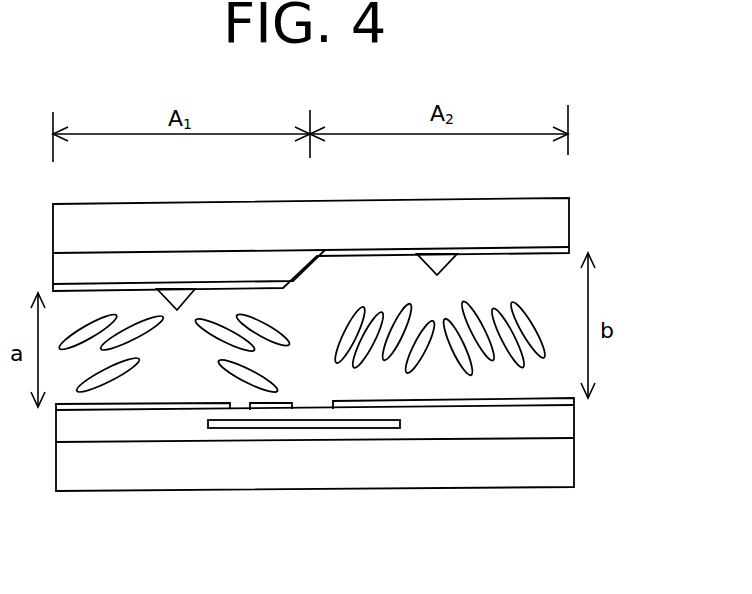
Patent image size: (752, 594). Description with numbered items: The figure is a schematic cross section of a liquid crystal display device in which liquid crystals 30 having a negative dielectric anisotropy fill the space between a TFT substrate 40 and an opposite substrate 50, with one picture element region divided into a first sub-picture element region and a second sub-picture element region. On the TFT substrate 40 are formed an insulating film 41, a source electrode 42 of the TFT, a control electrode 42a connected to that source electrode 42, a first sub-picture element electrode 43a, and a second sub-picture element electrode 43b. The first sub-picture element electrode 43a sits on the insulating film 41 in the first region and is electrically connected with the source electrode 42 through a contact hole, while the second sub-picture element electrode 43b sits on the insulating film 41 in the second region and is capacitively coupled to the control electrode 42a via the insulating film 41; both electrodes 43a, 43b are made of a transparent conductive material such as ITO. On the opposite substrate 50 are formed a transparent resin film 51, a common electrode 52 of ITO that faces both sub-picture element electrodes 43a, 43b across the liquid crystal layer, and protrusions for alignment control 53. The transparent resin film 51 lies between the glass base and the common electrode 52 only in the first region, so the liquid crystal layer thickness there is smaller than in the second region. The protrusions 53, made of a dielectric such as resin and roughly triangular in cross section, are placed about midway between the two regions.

The liquid crystal molecules 30 is at (274, 324).
The TFT substrate 40 is at (562, 462).
The insulating film 41 is at (562, 417).
The source electrode 42 is at (304, 467).
The control electrode 42a is at (368, 428).
The first sub-picture element electrode 43a is at (122, 405).
The second sub-picture element electrode 43b is at (470, 403).
The opposite substrate 50 is at (558, 225).
The transparent resin film 51 is at (104, 265).
The common electrode 52 is at (510, 256).
The protrusions for alignment control 53 is at (177, 298).